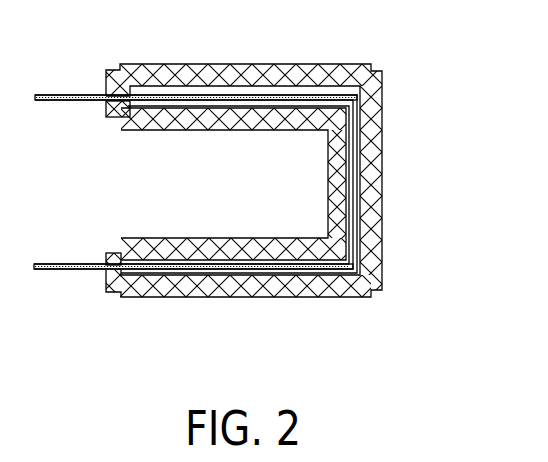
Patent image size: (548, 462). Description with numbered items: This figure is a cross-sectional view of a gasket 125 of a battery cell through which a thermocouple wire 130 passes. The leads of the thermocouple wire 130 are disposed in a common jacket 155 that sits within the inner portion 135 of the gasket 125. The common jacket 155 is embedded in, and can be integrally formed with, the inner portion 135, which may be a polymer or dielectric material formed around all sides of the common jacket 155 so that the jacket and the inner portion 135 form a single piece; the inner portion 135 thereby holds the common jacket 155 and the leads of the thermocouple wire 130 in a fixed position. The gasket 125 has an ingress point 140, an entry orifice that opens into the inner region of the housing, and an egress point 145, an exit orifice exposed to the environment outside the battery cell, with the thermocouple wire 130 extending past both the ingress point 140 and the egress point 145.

The gasket 125 is at (383, 165).
The thermocouple wire 130 is at (77, 94).
The inner portion 135 is at (360, 236).
The ingress point 140 is at (117, 252).
The egress point 145 is at (107, 111).
The common jacket 155 is at (200, 95).